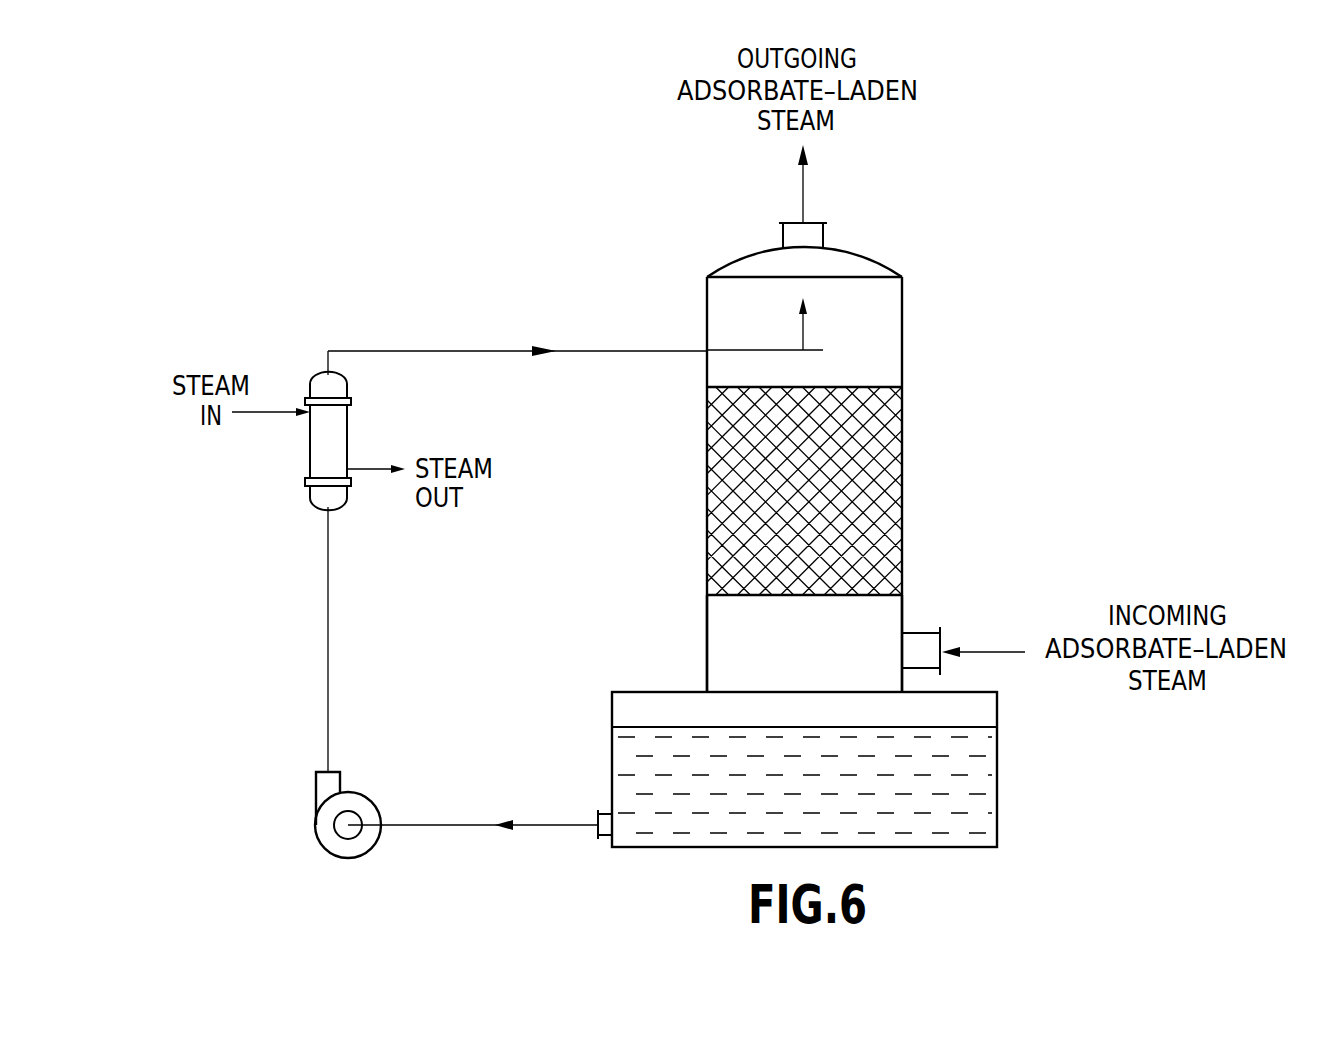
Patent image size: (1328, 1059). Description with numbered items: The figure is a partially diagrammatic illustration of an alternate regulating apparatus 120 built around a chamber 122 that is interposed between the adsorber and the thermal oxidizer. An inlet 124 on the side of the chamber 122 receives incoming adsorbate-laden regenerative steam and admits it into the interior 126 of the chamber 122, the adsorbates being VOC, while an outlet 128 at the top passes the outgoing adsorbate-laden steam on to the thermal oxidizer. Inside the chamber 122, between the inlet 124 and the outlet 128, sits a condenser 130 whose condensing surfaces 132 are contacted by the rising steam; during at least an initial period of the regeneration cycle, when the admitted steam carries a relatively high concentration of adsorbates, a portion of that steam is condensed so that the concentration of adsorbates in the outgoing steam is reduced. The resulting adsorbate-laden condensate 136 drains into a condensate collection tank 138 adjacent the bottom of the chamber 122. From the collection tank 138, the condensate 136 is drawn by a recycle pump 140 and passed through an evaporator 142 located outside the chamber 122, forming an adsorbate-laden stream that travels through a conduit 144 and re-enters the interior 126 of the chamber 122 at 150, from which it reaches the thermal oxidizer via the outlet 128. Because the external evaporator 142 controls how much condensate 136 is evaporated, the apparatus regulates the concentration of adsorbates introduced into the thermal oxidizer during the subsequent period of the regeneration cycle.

The regulating apparatus 120 is at (825, 418).
The chamber 122 is at (903, 342).
The inlet 124 is at (983, 630).
The interior 126 is at (716, 645).
The outlet 128 is at (805, 222).
The condenser 130 is at (763, 491).
The condensing surfaces 132 is at (720, 530).
The adsorbate-laden condensate 136 is at (775, 735).
The condensate collection tank 138 is at (832, 748).
The recycle pump 140 is at (352, 850).
The evaporator 142 is at (311, 442).
The conduit 144 is at (641, 349).
The communication point 150 is at (823, 350).